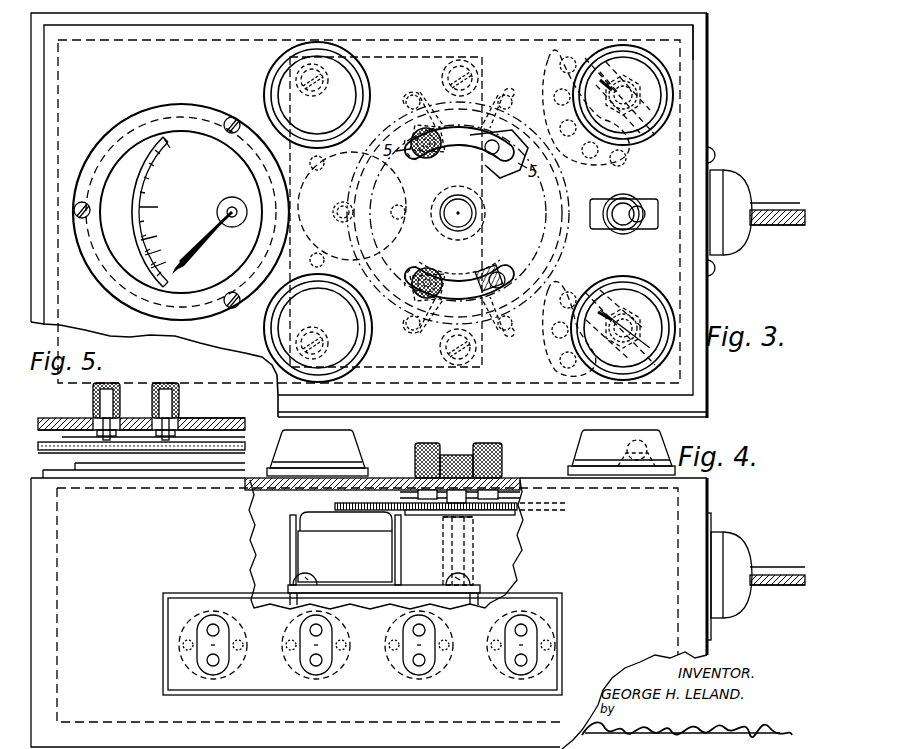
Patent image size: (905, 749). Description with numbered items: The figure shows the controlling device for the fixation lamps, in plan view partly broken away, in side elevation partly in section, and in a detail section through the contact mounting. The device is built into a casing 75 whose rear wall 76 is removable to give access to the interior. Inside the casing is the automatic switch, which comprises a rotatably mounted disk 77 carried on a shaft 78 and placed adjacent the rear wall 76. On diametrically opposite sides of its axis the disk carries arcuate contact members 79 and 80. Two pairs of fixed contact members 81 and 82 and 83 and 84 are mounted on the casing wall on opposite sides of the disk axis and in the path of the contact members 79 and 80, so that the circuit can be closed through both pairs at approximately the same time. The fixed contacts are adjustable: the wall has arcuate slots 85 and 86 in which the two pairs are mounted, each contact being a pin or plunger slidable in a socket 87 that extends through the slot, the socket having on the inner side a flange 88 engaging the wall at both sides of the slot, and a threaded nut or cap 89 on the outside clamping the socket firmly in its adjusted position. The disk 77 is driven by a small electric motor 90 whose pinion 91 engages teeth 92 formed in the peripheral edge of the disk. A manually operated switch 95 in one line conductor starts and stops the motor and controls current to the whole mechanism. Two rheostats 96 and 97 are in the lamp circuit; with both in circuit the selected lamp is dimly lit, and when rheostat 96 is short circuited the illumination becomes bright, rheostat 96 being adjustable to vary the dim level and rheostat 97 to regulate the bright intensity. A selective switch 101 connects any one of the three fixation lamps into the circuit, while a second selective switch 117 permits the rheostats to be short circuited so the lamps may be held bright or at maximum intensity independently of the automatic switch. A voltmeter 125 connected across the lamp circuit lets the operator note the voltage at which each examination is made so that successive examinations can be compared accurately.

In FIG. 3, the casing 75 is at (698, 62).
In FIG. 5, the rear wall 76 is at (60, 419).
In FIG. 4, the rear wall 76 is at (510, 482).
In FIG. 3, the disk 77 is at (555, 277).
In FIG. 5, the disk 77 is at (140, 458).
In FIG. 4, the disk 77 is at (512, 512).
In FIG. 4, the shaft 78 is at (448, 530).
In FIG. 3, the arcuate contact member 79 is at (508, 168).
In FIG. 5, the arcuate contact member 79 is at (200, 444).
In FIG. 3, the arcuate contact member 80 is at (513, 272).
In FIG. 3, the fixed contact member 81 is at (430, 155).
In FIG. 5, the fixed contact member 81 is at (100, 451).
In FIG. 3, the fixed contact member 82 is at (492, 160).
In FIG. 5, the fixed contact member 82 is at (190, 424).
In FIG. 3, the fixed contact member 83 is at (490, 268).
In FIG. 3, the fixed contact member 84 is at (458, 283).
In FIG. 3, the arcuate slot 85 is at (420, 158).
In FIG. 3, the arcuate slot 86 is at (425, 270).
In FIG. 3, the socket 87 is at (505, 282).
In FIG. 5, the socket 87 is at (170, 430).
In FIG. 3, the flange 88 is at (506, 104).
In FIG. 5, the flange 88 is at (108, 428).
In FIG. 3, the nut or cap 89 is at (425, 140).
In FIG. 5, the nut or cap 89 is at (165, 388).
In FIG. 4, the nut or cap 89 is at (416, 463).
In FIG. 4, the electric motor 90 is at (345, 548).
In FIG. 3, the pinion 91 is at (341, 216).
In FIG. 4, the pinion 91 is at (335, 507).
In FIG. 3, the teeth 92 is at (362, 237).
In FIG. 4, the teeth 92 is at (425, 511).
In FIG. 3, the manually operated switch 95 is at (636, 205).
In FIG. 4, the manually operated switch 95 is at (648, 456).
In FIG. 3, the rheostat 96 is at (317, 95).
In FIG. 3, the rheostat 97 is at (318, 328).
In FIG. 4, the rheostat 97 is at (317, 453).
In FIG. 3, the selective switch 101 is at (637, 305).
In FIG. 4, the selective switch 101 is at (621, 452).
In FIG. 3, the second selective switch 117 is at (640, 125).
In FIG. 3, the voltmeter 125 is at (181, 212).